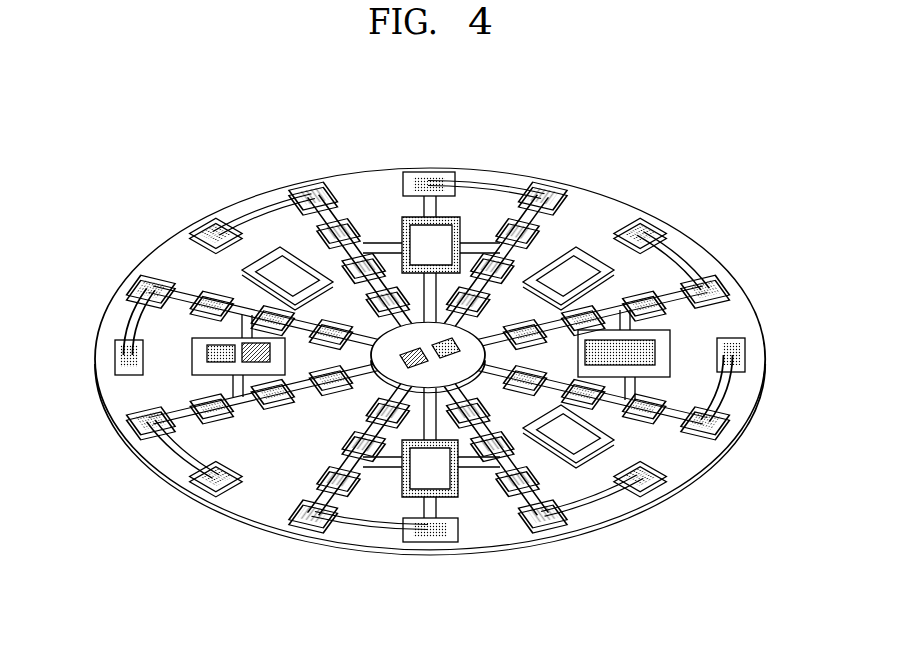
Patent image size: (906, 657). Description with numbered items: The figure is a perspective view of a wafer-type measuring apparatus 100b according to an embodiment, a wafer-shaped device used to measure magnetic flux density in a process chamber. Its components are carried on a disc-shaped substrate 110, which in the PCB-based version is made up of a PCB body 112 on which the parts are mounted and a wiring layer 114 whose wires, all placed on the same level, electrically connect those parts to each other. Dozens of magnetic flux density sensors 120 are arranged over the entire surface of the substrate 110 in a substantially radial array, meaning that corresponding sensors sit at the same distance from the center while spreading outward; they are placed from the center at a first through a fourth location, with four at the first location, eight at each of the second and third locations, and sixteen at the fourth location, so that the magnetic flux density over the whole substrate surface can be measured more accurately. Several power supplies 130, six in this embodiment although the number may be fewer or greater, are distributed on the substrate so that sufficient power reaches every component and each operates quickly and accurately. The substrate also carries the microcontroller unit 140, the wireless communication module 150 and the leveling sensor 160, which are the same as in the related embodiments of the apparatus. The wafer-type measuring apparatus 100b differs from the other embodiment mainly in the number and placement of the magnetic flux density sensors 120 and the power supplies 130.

The wafer-type measuring apparatus 100b is at (656, 118).
The substrate 110 is at (498, 108).
The PCB body 112 is at (373, 183).
The wiring layer 114 is at (477, 183).
The magnetic flux density sensors 120 is at (547, 193).
The power supplies 130 is at (605, 438).
The microcontroller unit (MCU) 140 is at (200, 349).
The wireless communication module 150 is at (233, 335).
The leveling sensor 160 is at (404, 362).